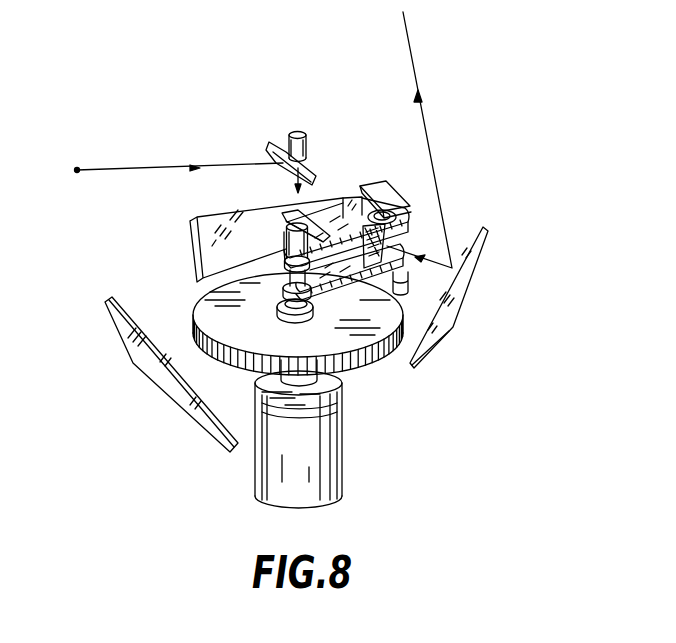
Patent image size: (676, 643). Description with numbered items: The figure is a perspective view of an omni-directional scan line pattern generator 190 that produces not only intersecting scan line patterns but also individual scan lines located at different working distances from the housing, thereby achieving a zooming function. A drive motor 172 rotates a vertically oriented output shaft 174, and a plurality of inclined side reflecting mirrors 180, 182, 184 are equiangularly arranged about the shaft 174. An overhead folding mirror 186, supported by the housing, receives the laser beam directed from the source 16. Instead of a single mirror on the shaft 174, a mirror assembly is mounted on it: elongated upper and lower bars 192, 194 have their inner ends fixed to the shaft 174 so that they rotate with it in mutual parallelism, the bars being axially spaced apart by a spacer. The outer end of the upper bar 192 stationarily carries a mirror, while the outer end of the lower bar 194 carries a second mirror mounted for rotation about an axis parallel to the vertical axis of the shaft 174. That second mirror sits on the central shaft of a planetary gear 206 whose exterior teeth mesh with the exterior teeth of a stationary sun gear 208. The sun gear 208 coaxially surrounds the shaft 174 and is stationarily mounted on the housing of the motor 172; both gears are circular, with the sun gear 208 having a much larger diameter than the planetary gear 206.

The source 16 is at (77, 170).
The omni-directional scan line pattern generator 190 is at (183, 152).
The overhead folding mirror 186 is at (280, 143).
The inclined side reflecting mirror 182 is at (205, 224).
The inclined side reflecting mirror 184 is at (463, 297).
The inclined side reflecting mirror 180 is at (170, 378).
The stationary sun gear 208 is at (350, 343).
The output shaft 174 is at (300, 320).
The upper bar 192 is at (402, 224).
The lower bar 194 is at (335, 283).
The planetary gear 206 is at (407, 286).
The drive motor 172 is at (330, 453).